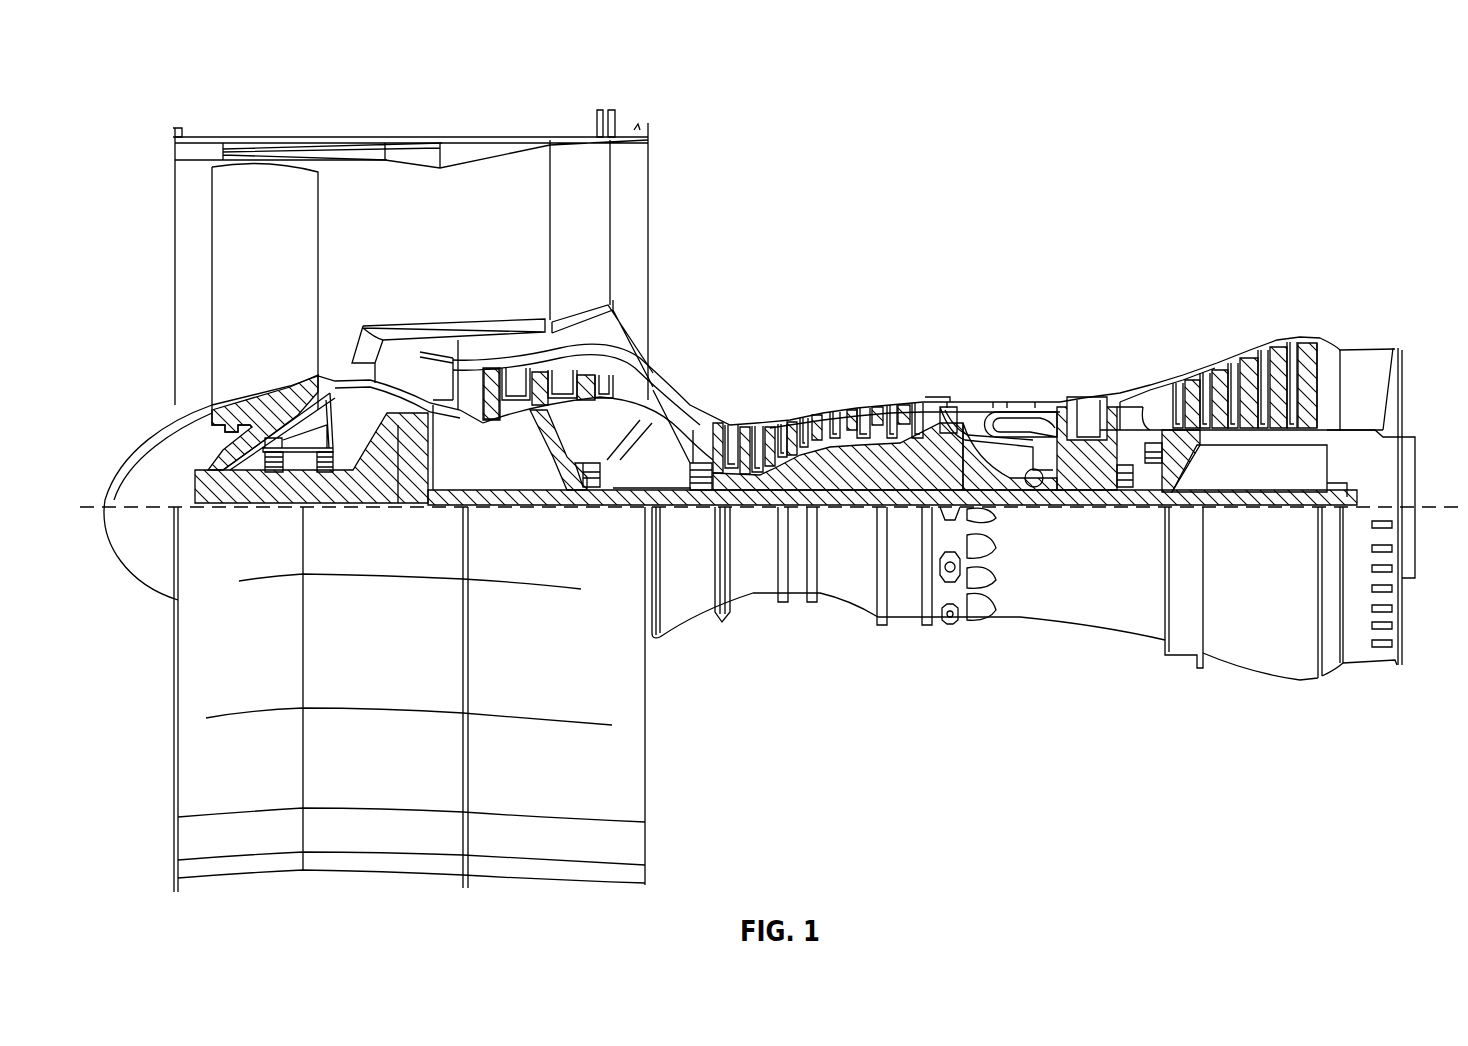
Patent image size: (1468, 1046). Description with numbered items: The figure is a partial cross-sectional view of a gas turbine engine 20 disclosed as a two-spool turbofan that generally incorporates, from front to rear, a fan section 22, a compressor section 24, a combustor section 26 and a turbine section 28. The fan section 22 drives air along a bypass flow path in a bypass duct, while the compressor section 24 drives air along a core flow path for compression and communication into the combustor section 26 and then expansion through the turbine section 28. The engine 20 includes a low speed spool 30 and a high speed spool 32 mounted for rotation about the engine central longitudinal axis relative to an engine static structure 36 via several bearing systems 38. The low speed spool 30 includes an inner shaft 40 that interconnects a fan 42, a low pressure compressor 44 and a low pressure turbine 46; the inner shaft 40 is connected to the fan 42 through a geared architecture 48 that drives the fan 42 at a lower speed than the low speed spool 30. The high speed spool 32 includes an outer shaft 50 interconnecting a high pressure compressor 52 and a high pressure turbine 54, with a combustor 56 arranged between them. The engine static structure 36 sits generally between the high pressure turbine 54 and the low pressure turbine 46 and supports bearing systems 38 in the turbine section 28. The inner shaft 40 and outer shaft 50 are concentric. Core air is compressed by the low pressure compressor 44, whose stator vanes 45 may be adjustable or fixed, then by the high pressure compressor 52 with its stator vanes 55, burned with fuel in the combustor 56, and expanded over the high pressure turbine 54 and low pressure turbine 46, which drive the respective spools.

The gas turbine engine 20 is at (1222, 176).
The fan section 22 is at (445, 108).
The compressor section 24 is at (836, 364).
The combustor section 26 is at (1000, 360).
The turbine section 28 is at (1151, 352).
The low speed spool 30 is at (868, 510).
The high speed spool 32 is at (922, 450).
The engine static structure 36 is at (906, 626).
The bearing systems 38 is at (277, 467).
The inner shaft 40 is at (660, 498).
The fan 42 is at (292, 267).
The low pressure compressor 44 is at (565, 385).
The stator vanes 45 is at (517, 376).
The low pressure turbine 46 is at (1254, 366).
The geared architecture 48 is at (413, 470).
The outer shaft 50 is at (1034, 488).
The high pressure compressor 52 is at (826, 462).
The high pressure turbine 54 is at (1089, 398).
The stator vanes 55 is at (733, 424).
The combustor 56 is at (1011, 425).